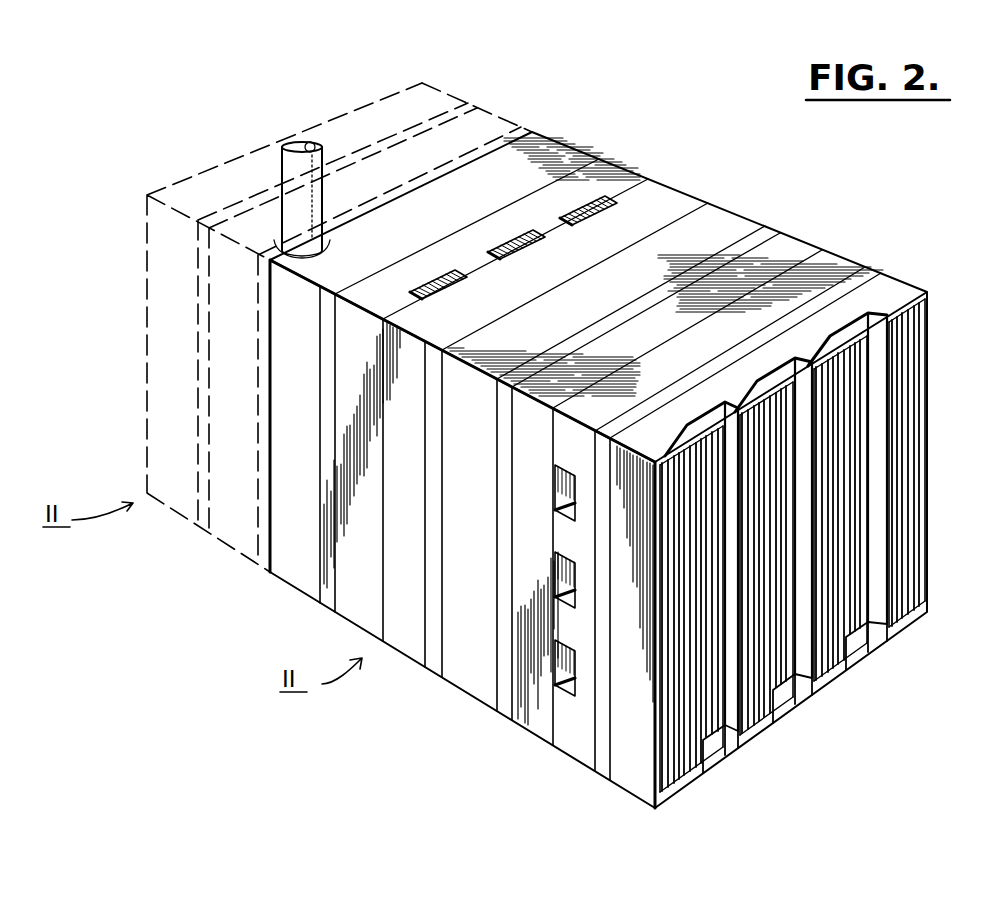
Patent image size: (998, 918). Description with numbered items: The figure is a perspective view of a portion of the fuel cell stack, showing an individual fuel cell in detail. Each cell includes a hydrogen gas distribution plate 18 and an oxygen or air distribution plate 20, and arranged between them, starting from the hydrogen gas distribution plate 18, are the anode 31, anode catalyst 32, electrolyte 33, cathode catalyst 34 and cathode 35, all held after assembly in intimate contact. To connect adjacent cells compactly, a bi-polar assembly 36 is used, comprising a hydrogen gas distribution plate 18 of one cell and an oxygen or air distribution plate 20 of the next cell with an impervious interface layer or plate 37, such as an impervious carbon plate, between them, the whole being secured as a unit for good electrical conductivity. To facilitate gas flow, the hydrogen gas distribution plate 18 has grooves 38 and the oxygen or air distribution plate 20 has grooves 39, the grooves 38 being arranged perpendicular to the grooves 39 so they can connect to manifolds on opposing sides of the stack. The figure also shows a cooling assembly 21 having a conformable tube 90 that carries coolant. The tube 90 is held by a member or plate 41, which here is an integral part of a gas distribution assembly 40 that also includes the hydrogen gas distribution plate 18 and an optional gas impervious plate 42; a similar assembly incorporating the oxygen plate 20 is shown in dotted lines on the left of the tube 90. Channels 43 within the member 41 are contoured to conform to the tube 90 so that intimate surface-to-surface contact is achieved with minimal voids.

The hydrogen gas distribution plate 18 is at (897, 292).
The oxygen gas distribution plate 20 is at (868, 272).
The cooling assembly 21 is at (322, 614).
The anode 31 is at (660, 202).
The anode catalyst 32 is at (692, 214).
The electrolyte 33 is at (728, 234).
The cathode catalyst 34 is at (793, 250).
The cathode 35 is at (840, 264).
The bi-polar assembly 36 is at (652, 810).
The interface layer or plate 37 is at (870, 278).
The grooves 38 is at (503, 234).
The grooves 39 is at (540, 567).
The gas distribution assembly 40 is at (548, 120).
The member or plate 41 is at (230, 301).
The gas impervious plate 42 is at (200, 259).
The channels 43 is at (930, 387).
The conformable tube 90 is at (283, 180).